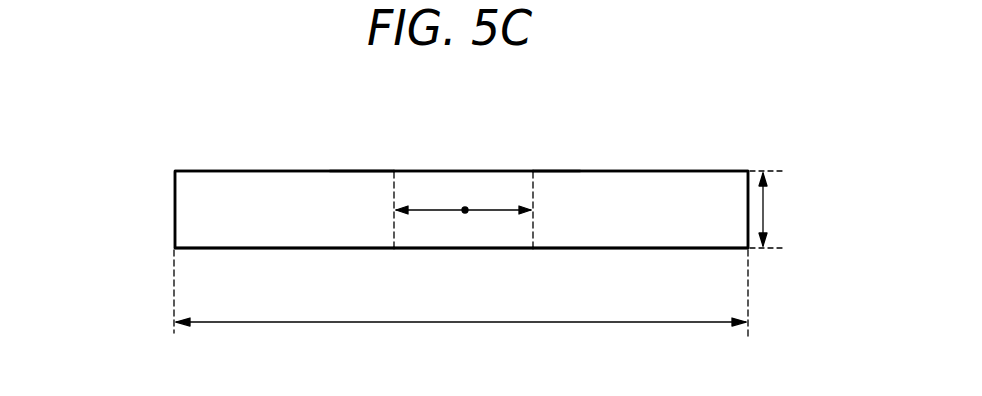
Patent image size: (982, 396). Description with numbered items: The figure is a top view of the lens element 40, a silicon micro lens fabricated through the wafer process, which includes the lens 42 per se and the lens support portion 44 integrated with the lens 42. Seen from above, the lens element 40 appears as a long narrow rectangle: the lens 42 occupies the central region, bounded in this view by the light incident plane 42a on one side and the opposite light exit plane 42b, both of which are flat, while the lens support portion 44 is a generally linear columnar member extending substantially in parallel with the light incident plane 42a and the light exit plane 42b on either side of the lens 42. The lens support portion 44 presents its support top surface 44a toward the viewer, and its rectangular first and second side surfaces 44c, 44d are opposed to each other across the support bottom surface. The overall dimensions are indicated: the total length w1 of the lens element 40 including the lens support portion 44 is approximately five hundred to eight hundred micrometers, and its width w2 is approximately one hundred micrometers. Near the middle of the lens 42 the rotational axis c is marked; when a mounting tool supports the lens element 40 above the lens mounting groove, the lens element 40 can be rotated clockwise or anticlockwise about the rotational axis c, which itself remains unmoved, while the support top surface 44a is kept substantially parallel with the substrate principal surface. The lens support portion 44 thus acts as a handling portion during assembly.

The lens element 40 is at (813, 104).
The lens support portion 44 is at (300, 193).
The lens 42 is at (493, 209).
The light incident plane 42a is at (450, 250).
The light exit plane 42b is at (420, 171).
The support top surface 44a is at (220, 205).
The first side surface 44c is at (298, 250).
The second side surface 44d is at (340, 171).
The rotational axis c is at (465, 212).
The total length w1 is at (642, 324).
The width w2 is at (766, 211).